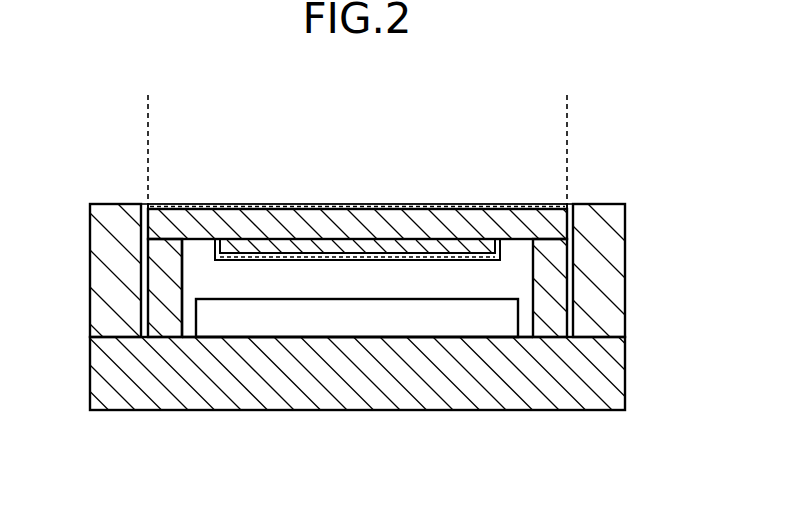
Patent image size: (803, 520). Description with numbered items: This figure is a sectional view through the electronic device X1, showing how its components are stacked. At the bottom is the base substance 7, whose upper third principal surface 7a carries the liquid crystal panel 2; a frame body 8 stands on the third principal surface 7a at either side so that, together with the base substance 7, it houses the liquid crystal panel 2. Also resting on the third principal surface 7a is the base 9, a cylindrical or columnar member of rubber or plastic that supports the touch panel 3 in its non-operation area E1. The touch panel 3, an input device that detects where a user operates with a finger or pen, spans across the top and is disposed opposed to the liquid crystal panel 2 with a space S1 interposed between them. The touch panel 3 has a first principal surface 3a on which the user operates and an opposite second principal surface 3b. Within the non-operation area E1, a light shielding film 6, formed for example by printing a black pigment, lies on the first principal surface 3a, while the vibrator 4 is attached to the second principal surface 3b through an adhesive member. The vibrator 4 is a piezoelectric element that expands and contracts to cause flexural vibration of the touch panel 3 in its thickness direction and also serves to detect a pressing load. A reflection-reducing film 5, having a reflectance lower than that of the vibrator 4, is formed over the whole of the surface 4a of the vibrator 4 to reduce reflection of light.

The liquid crystal panel 2 is at (406, 324).
The touch panel 3 is at (357, 305).
The first principal surface 3a is at (213, 213).
The second principal surface 3b is at (208, 242).
The vibrator 4 is at (296, 246).
The surface of the vibrator 4a is at (348, 254).
The reflection-reducing film 5 is at (394, 255).
The light shielding film 6 is at (509, 205).
The base substance 7 is at (347, 400).
The third principal surface 7a is at (284, 339).
The frame body 8 is at (97, 272).
The base 9 is at (150, 230).
The space S1 is at (443, 273).
The non-operation area E1 is at (148, 108).
The electronic device X1 is at (611, 96).